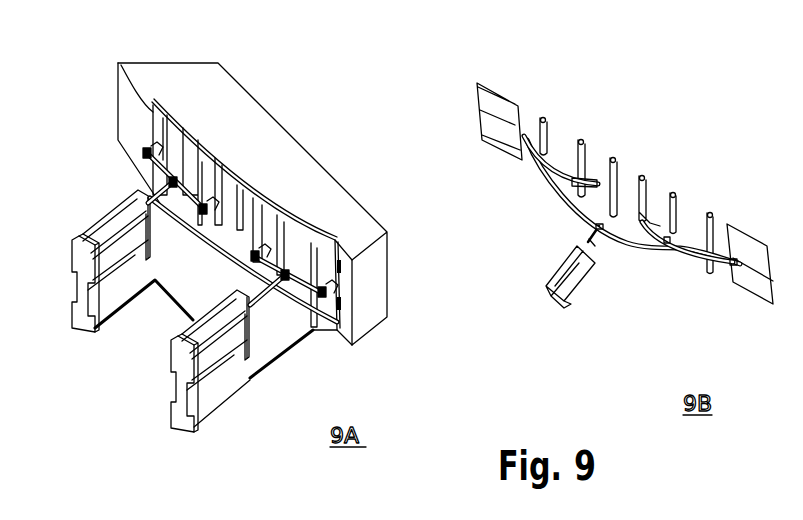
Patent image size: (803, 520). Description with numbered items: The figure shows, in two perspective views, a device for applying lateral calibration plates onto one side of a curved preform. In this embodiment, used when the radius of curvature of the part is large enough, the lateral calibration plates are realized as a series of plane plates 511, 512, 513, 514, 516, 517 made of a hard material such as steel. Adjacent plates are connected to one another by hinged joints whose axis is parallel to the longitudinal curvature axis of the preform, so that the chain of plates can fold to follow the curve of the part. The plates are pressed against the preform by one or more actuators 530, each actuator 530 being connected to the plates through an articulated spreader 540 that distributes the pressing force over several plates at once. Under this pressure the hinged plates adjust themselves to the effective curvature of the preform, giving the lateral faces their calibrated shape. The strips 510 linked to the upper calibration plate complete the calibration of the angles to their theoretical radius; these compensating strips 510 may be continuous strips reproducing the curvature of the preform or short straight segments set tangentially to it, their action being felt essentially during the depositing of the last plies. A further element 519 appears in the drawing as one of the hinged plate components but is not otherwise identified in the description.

The compensating strips 510 is at (297, 290).
The plane plate 511 is at (153, 113).
The plane plate 512 is at (182, 145).
The plane plate 513 is at (215, 160).
The plane plate 514 is at (238, 195).
The plane plate 516 is at (672, 194).
The plane plate 517 is at (343, 308).
The bracket 519 is at (640, 177).
The actuator 530 is at (67, 247).
The articulated spreader 540 is at (250, 244).